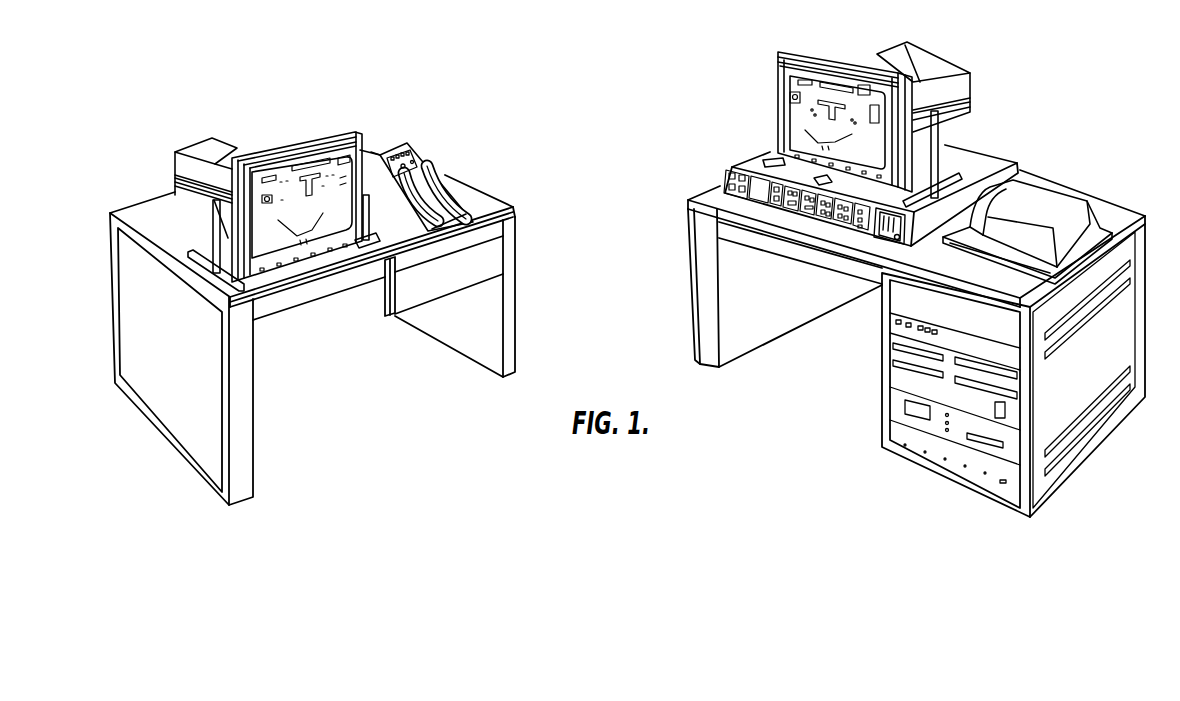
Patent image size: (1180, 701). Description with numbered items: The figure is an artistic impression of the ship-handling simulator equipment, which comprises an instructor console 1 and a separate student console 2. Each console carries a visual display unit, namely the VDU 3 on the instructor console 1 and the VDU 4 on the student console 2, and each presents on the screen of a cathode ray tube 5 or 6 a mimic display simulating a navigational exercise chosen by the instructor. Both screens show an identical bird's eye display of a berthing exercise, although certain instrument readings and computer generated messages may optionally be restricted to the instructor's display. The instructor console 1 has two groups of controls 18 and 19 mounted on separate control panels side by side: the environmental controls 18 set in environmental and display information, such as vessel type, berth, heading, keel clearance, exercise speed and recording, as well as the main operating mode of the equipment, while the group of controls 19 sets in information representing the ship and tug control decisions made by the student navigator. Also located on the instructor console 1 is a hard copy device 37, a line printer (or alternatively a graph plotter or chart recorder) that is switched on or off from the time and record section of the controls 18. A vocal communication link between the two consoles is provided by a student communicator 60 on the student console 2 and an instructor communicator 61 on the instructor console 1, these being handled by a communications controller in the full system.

The instructor console 1 is at (985, 136).
The student console 2 is at (422, 167).
The visual display unit 3 is at (930, 66).
The visual display unit 4 is at (244, 140).
The cathode ray tube 5 is at (793, 117).
The cathode ray tube 6 is at (271, 238).
The environmental controls 18 is at (751, 202).
The group of controls 19 is at (833, 242).
The hard copy device 37 is at (1043, 200).
The student communicator 60 is at (388, 155).
The instructor communicator 61 is at (819, 192).